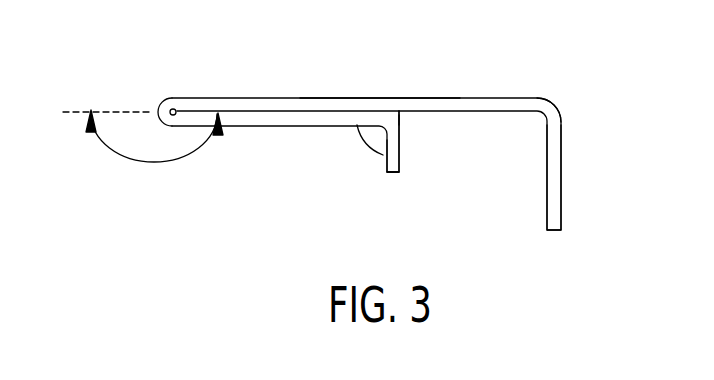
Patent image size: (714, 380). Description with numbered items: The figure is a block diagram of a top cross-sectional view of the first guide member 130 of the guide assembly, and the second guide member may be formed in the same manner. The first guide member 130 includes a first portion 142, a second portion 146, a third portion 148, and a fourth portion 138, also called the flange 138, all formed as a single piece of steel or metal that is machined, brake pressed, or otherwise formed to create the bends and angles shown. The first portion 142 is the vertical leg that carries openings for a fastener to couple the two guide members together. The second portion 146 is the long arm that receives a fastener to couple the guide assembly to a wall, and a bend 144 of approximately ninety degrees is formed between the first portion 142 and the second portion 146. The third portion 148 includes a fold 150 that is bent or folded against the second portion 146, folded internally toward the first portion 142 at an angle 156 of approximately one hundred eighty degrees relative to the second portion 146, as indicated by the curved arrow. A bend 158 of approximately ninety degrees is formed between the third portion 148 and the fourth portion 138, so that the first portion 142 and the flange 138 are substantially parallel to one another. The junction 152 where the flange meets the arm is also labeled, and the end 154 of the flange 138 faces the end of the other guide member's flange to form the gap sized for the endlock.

The first guide member 130 is at (475, 97).
The fourth portion 138 is at (383, 155).
The first portion 142 is at (562, 173).
The bend 144 is at (560, 108).
The second portion 146 is at (385, 97).
The third portion 148 is at (252, 128).
The fold 150 is at (167, 100).
The stem junction 152 is at (395, 114).
The end 154 is at (393, 175).
The angle 156 is at (150, 162).
The bend 158 is at (357, 133).